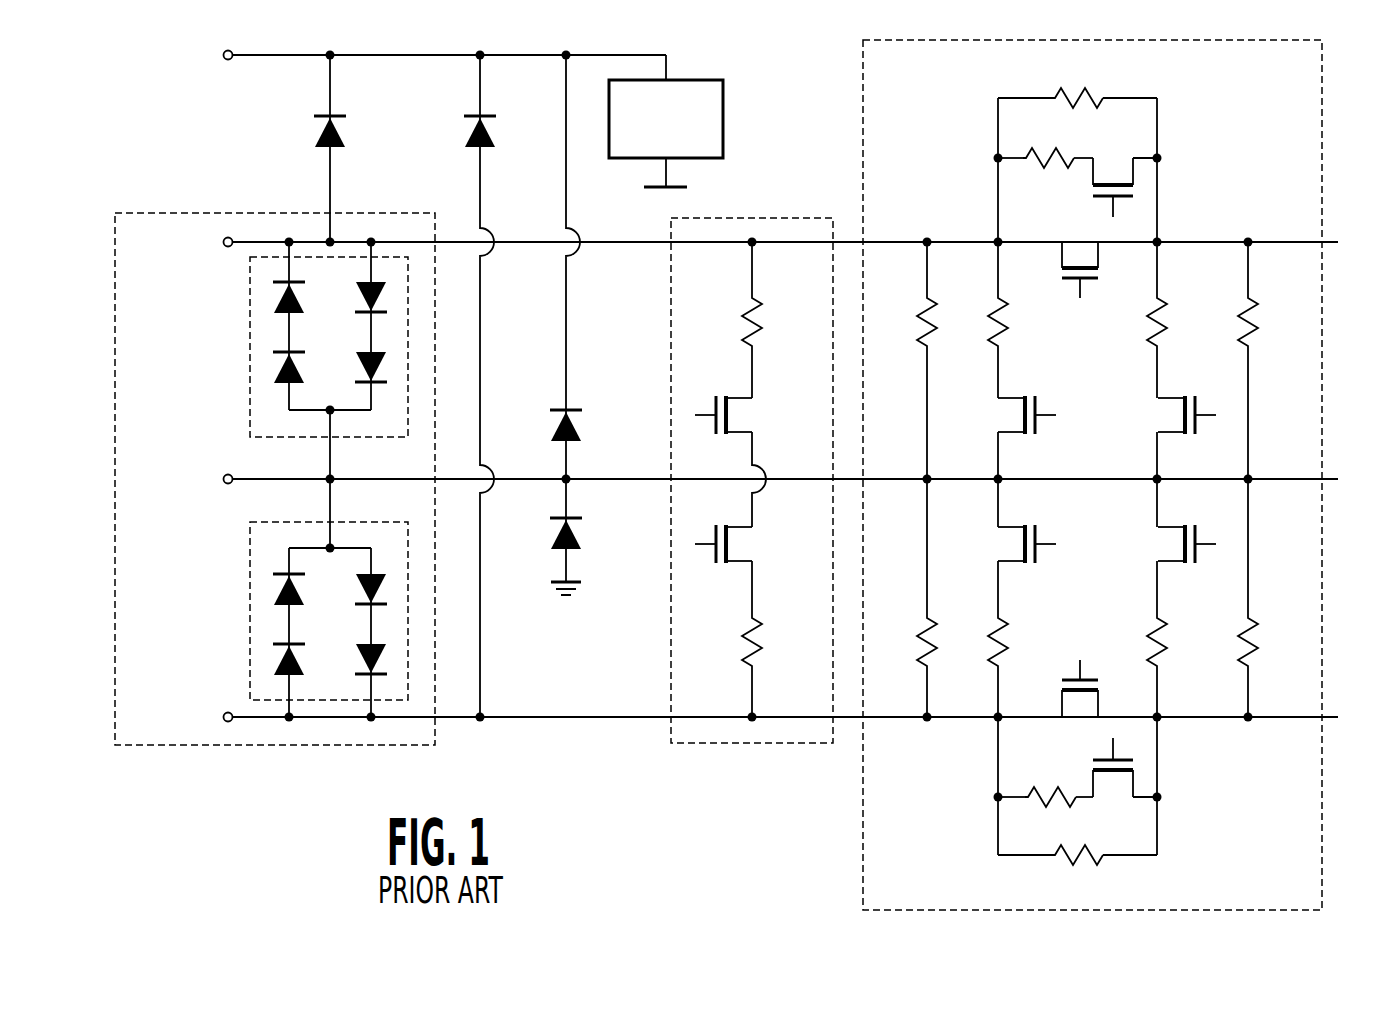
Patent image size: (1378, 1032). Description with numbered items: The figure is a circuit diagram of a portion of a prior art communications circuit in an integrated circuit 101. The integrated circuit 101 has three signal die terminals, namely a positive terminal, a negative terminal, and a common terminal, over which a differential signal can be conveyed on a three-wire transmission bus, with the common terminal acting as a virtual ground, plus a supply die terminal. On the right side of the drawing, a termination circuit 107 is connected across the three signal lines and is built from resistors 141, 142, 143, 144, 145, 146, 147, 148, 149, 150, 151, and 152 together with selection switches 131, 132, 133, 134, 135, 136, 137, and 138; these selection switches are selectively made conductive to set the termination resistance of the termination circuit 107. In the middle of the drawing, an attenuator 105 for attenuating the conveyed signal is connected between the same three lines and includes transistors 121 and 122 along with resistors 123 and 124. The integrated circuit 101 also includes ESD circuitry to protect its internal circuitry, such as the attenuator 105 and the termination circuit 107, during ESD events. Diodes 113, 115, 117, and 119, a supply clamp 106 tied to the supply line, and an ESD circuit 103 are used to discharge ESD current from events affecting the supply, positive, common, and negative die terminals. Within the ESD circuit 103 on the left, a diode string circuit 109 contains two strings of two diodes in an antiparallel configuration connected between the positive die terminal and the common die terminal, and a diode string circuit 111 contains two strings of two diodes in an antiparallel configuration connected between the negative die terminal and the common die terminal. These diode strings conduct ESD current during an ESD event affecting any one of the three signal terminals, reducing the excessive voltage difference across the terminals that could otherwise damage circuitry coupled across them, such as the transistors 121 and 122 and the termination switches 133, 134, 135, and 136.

The integrated circuit 101 is at (183, 785).
The ESD circuit 103 is at (174, 212).
The attenuator 105 is at (746, 217).
The supply clamp 106 is at (700, 80).
The termination circuit 107 is at (1322, 102).
The diode string circuit 109 is at (249, 366).
The diode string circuit 111 is at (249, 629).
The diode 113 is at (316, 136).
The diode 115 is at (467, 136).
The diode 117 is at (580, 431).
The diode 119 is at (580, 536).
The transistor 121 is at (713, 410).
The transistor 122 is at (713, 560).
The resistor 123 is at (763, 318).
The resistor 124 is at (765, 640).
The selection switch 131 is at (1108, 205).
The selection switch 132 is at (1058, 258).
The selection switch 133 is at (1037, 405).
The selection switch 134 is at (1197, 405).
The selection switch 135 is at (1040, 556).
The selection switch 136 is at (1200, 556).
The selection switch 137 is at (1075, 676).
The selection switch 138 is at (1108, 758).
The resistor 141 is at (920, 328).
The resistor 142 is at (920, 630).
The resistor 143 is at (1090, 92).
The resistor 144 is at (1060, 152).
The resistor 145 is at (990, 328).
The resistor 146 is at (1150, 328).
The resistor 147 is at (1254, 336).
The resistor 148 is at (990, 630).
The resistor 149 is at (1150, 630).
The resistor 150 is at (1254, 636).
The resistor 151 is at (1058, 806).
The resistor 152 is at (1063, 866).